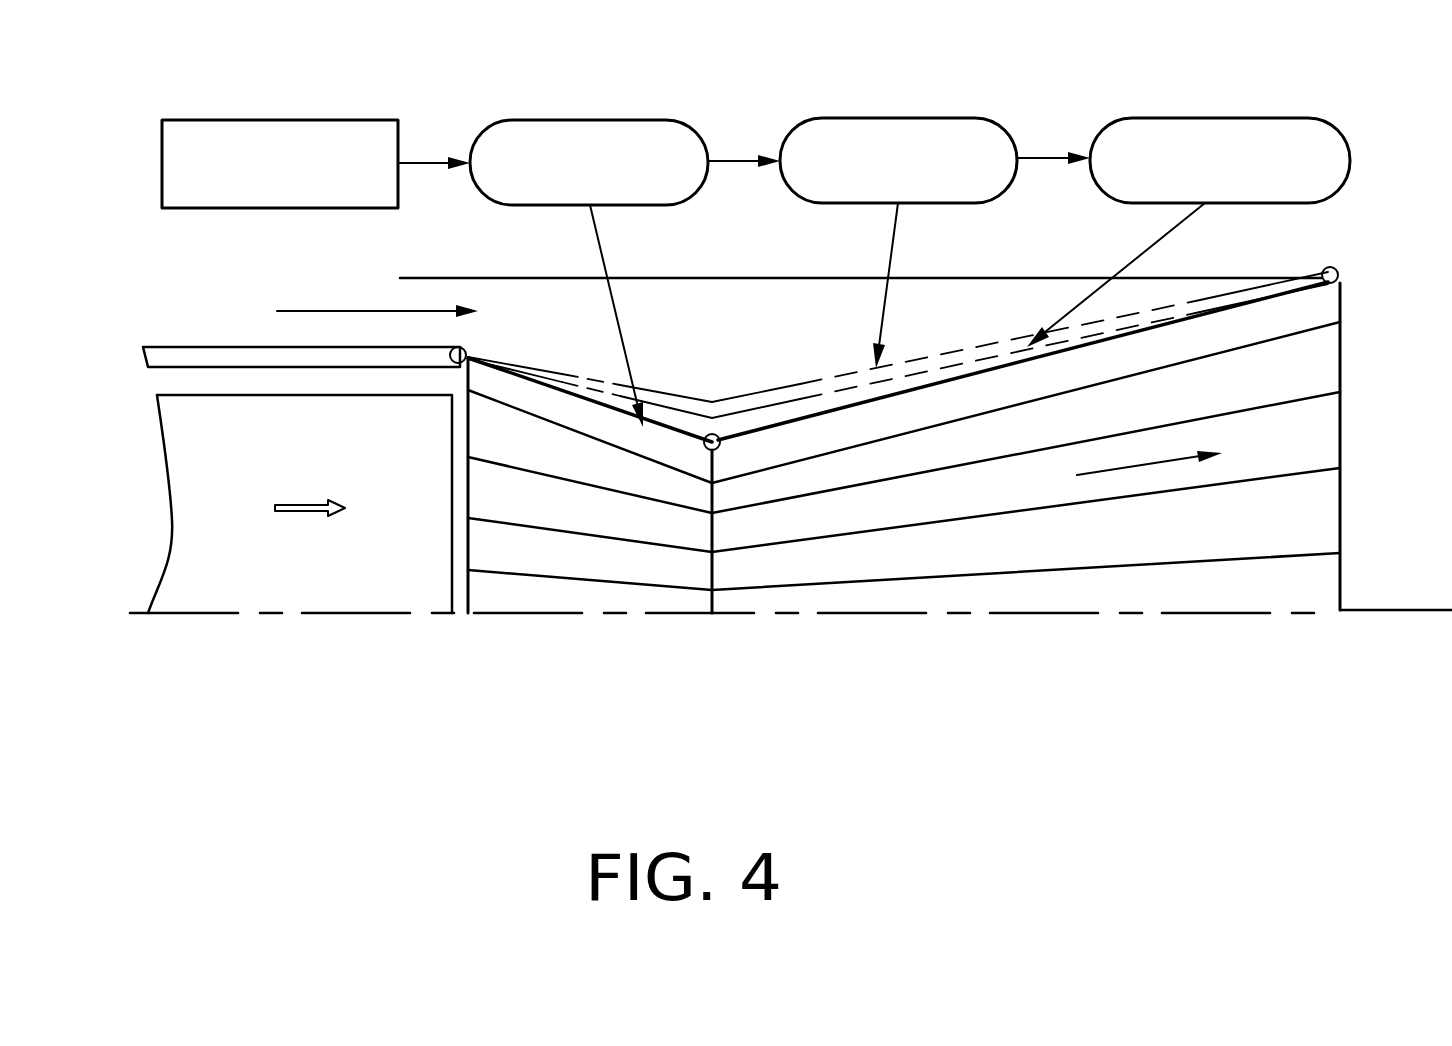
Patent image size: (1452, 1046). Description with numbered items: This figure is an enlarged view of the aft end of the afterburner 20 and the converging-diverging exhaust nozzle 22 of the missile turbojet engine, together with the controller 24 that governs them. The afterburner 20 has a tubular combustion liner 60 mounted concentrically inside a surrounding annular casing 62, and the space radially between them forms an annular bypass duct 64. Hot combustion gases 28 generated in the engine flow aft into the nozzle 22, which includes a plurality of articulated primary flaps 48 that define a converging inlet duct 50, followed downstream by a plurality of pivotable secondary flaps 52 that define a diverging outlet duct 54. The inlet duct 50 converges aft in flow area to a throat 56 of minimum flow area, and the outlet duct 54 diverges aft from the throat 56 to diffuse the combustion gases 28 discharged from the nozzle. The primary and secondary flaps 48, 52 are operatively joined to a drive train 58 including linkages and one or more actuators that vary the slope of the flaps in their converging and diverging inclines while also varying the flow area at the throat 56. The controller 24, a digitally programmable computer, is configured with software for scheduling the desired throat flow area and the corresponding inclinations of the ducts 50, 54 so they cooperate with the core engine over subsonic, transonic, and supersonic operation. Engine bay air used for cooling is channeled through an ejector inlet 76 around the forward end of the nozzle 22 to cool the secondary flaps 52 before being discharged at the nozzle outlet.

The afterburner 20 is at (181, 330).
The exhaust nozzle 22 is at (570, 636).
The controller 24 is at (280, 120).
The combustion gases 28 is at (300, 503).
The primary flaps 48 is at (603, 413).
The converging inlet duct 50 is at (555, 514).
The secondary flaps 52 is at (1107, 347).
The diverging outlet duct 54 is at (1012, 499).
The throat 56 is at (712, 578).
The drive train 58 is at (898, 118).
The combustion liner 60 is at (200, 396).
The casing 62 is at (237, 347).
The bypass duct 64 is at (323, 381).
The ejector inlet 76 is at (405, 298).